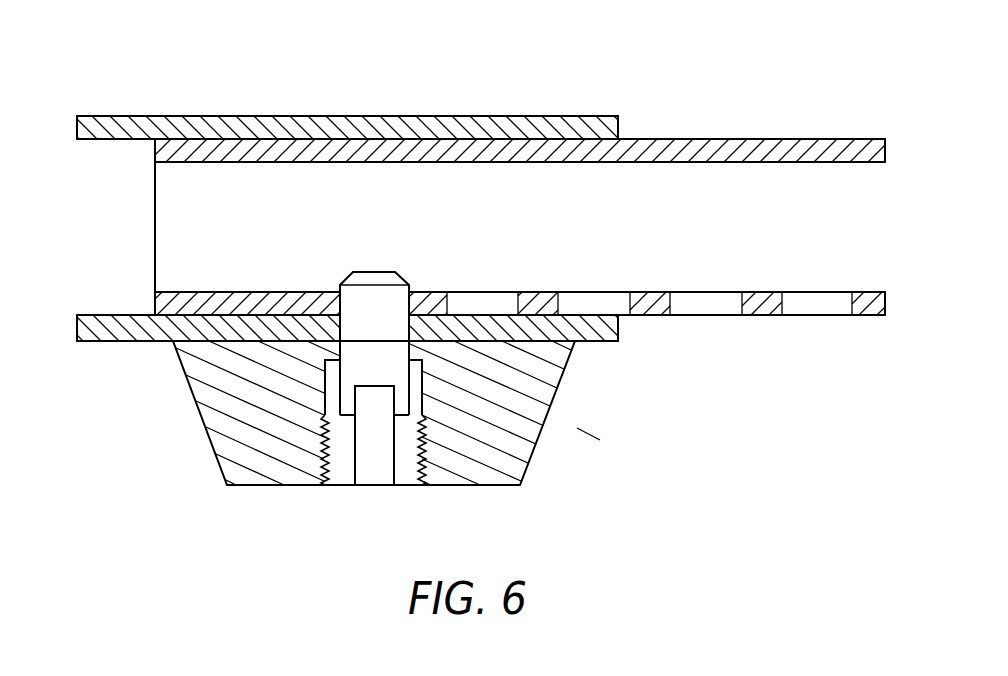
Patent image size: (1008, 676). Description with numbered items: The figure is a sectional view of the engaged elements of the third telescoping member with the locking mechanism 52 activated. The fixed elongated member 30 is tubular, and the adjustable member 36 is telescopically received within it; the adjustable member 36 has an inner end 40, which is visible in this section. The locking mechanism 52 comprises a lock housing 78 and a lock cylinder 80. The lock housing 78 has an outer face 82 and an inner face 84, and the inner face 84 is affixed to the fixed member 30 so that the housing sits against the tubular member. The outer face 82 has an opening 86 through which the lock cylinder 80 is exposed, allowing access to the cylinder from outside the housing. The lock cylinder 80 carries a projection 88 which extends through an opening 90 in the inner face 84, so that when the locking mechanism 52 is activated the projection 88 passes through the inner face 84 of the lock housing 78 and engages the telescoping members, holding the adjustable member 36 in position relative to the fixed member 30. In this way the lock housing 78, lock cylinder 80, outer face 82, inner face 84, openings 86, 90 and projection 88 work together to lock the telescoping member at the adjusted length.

The fixed elongated member 30 is at (173, 116).
The adjustable member 36 is at (837, 139).
The inner end 40 is at (155, 217).
The locking mechanism 52 is at (577, 428).
The lock housing 78 is at (208, 435).
The lock cylinder 80 is at (380, 450).
The outer face 82 is at (250, 487).
The inner face 84 is at (260, 322).
The opening 86 is at (335, 487).
The projection 88 is at (368, 315).
The opening 90 is at (413, 347).